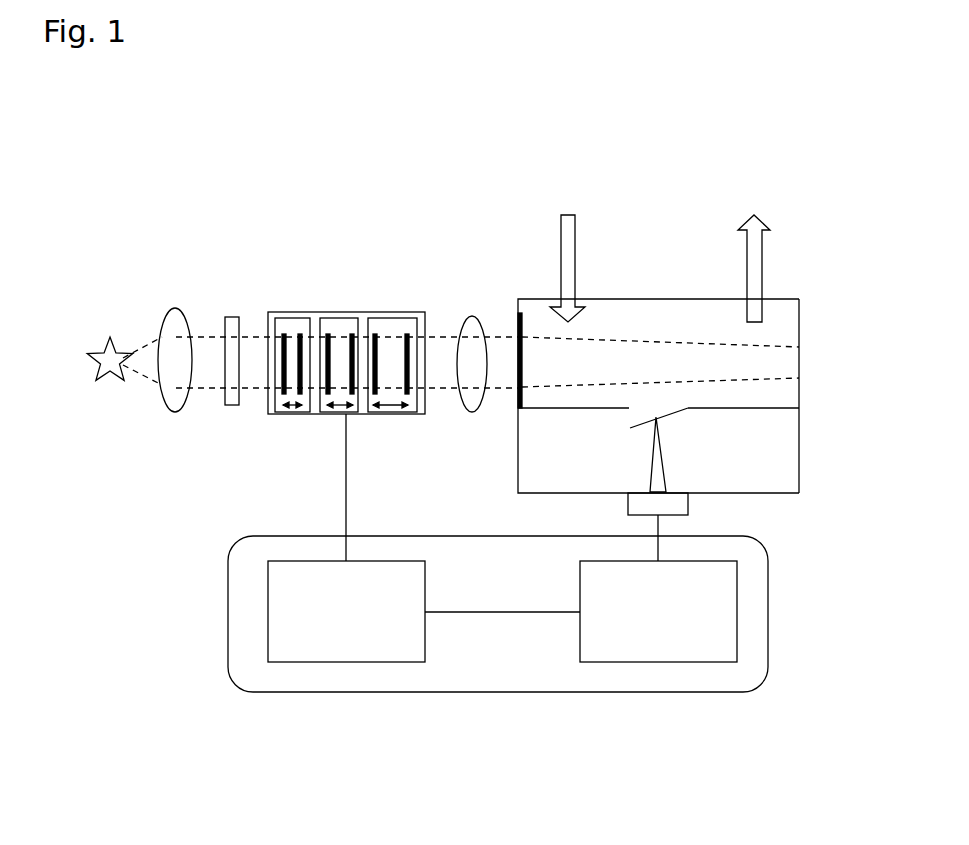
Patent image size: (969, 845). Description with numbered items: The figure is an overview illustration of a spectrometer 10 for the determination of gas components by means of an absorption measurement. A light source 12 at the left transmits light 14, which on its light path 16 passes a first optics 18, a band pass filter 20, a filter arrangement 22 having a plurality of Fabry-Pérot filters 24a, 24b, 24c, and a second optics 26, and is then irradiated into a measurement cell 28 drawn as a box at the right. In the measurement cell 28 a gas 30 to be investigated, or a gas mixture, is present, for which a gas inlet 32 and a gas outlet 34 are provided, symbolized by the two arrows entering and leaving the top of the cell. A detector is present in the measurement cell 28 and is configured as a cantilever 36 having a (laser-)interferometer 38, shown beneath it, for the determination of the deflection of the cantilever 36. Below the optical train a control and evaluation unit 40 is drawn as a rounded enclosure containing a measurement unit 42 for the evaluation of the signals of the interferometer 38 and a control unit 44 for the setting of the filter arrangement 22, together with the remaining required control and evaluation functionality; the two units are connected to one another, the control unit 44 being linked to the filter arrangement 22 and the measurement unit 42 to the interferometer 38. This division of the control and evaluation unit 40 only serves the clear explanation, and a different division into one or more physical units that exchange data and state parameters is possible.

The spectrometer 10 is at (471, 408).
The light source 12 is at (92, 391).
The light 14 is at (119, 328).
The light path 16 is at (469, 408).
The first optics 18 is at (194, 329).
The band pass filter 20 is at (259, 326).
The filter arrangement 22 is at (357, 404).
The Fabry-Pérot filter 24a is at (277, 398).
The Fabry-Pérot filter 24b is at (369, 411).
The Fabry-Pérot filter 24c is at (419, 392).
The second optics 26 is at (466, 329).
The measurement cell 28 is at (844, 396).
The gas 30 is at (658, 363).
The gas inlet 32 is at (547, 239).
The gas outlet 34 is at (776, 239).
The cantilever 36 is at (694, 450).
The interferometer 38 is at (735, 527).
The control and evaluation unit 40 is at (536, 614).
The measurement unit 42 is at (658, 669).
The control unit 44 is at (346, 669).